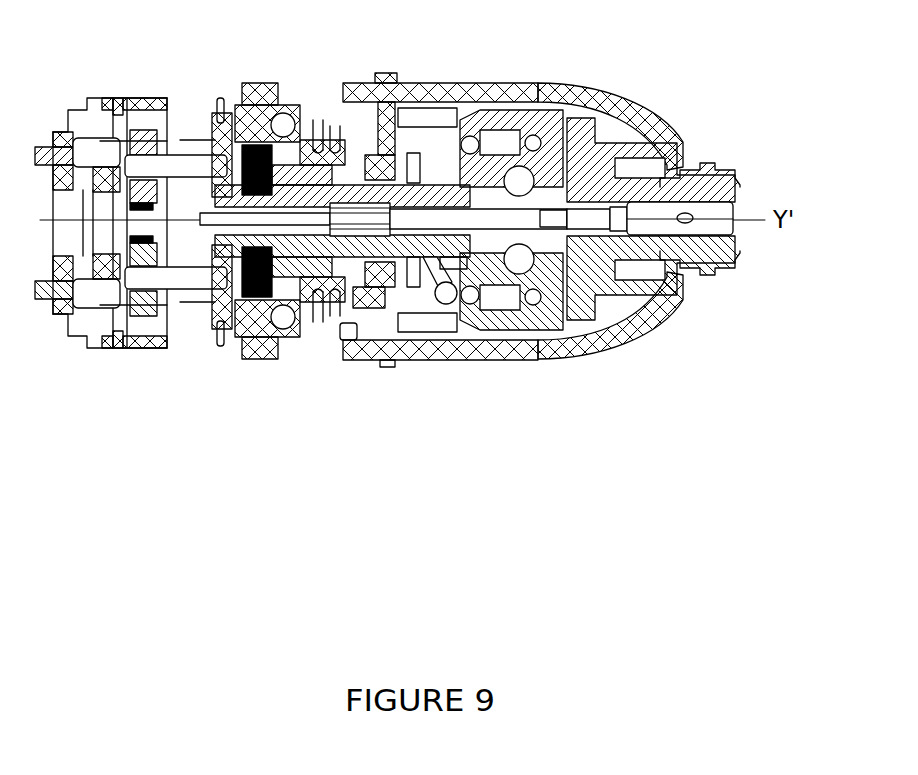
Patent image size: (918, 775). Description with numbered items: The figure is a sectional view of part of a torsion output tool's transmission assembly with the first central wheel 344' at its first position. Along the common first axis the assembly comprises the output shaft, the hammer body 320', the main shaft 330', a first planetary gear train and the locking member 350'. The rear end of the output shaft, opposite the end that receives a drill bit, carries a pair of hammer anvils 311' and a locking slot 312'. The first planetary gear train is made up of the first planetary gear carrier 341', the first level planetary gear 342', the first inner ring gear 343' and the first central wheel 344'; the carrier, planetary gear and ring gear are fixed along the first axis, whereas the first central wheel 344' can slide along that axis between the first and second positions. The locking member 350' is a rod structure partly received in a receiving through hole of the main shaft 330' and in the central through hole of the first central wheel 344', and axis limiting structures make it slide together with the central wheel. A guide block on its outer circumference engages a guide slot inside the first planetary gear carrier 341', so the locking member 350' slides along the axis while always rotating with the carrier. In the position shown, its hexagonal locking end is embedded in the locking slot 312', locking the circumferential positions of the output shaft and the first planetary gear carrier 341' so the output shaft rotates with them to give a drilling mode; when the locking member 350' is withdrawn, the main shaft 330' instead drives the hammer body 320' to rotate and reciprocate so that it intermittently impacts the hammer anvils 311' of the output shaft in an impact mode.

The hammer anvils 311' is at (667, 177).
The locking slot 312' is at (722, 203).
The hammer body 320' is at (518, 188).
The main shaft 330' is at (511, 238).
The first planetary gear carrier 341' is at (383, 176).
The first level planetary gear 342' is at (325, 264).
The first inner ring gear 343' is at (144, 190).
The first central wheel 344' is at (126, 272).
The locking member 350' is at (501, 330).